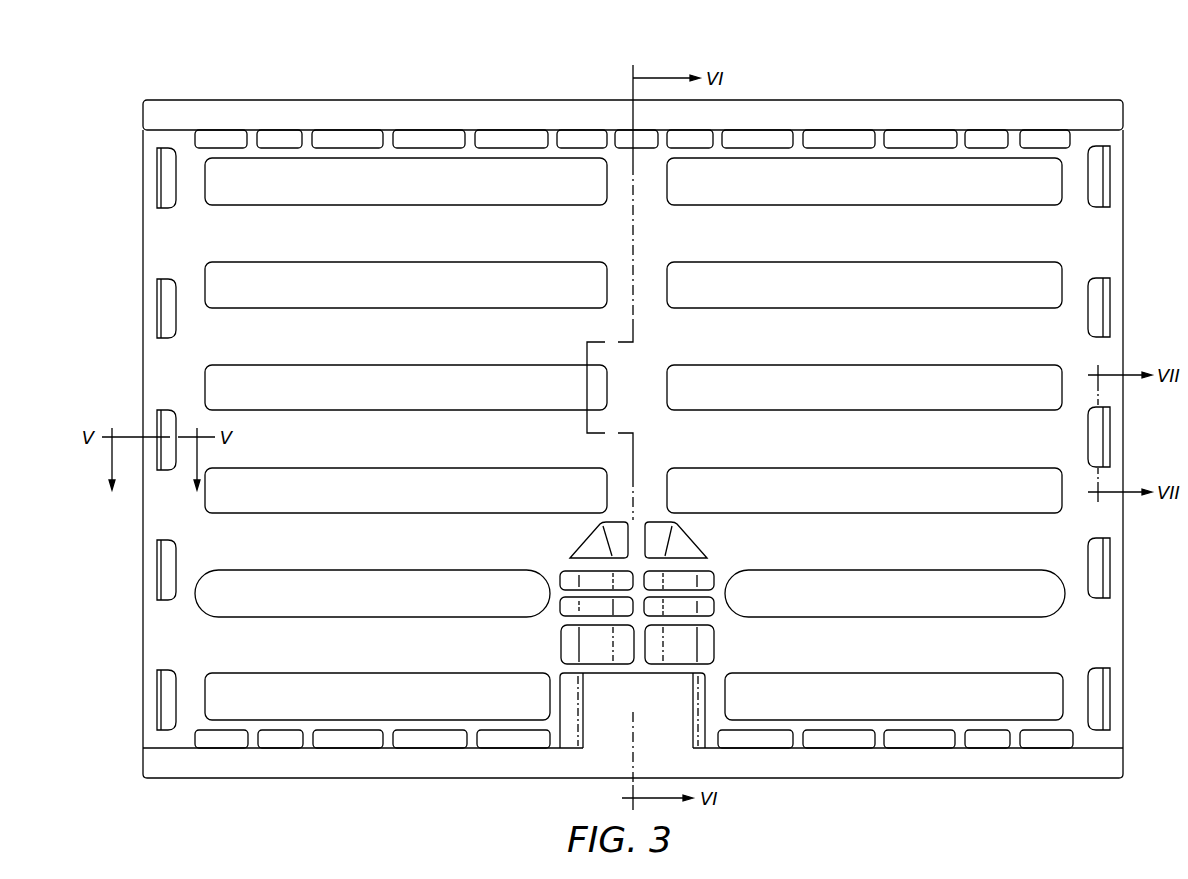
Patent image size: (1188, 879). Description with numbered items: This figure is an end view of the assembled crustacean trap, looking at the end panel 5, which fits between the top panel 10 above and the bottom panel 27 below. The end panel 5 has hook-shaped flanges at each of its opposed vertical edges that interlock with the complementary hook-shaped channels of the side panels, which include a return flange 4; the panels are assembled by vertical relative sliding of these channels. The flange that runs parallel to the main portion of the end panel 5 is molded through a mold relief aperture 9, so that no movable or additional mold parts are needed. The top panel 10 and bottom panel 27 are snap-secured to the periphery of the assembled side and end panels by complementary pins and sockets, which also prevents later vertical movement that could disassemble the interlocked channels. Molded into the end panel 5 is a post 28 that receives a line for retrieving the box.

The return flange 4 is at (1093, 186).
The end panel 5 is at (133, 232).
The mold relief aperture 9 is at (158, 176).
The top panel 10 is at (880, 113).
The bottom panel 27 is at (818, 763).
The post 28 is at (702, 580).